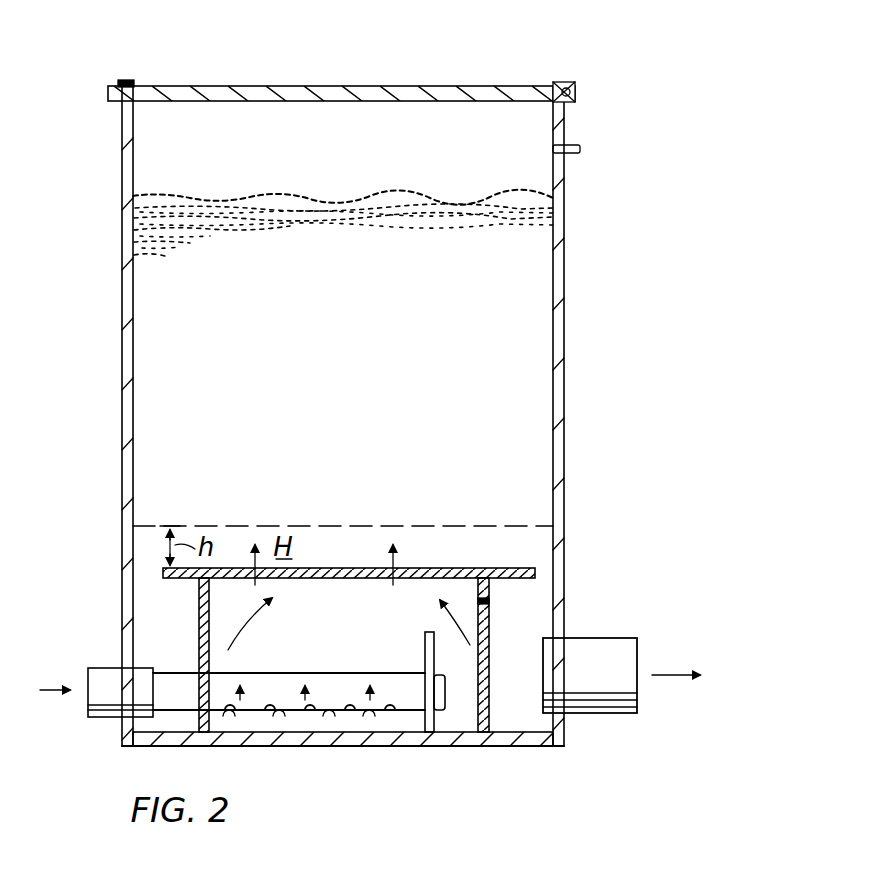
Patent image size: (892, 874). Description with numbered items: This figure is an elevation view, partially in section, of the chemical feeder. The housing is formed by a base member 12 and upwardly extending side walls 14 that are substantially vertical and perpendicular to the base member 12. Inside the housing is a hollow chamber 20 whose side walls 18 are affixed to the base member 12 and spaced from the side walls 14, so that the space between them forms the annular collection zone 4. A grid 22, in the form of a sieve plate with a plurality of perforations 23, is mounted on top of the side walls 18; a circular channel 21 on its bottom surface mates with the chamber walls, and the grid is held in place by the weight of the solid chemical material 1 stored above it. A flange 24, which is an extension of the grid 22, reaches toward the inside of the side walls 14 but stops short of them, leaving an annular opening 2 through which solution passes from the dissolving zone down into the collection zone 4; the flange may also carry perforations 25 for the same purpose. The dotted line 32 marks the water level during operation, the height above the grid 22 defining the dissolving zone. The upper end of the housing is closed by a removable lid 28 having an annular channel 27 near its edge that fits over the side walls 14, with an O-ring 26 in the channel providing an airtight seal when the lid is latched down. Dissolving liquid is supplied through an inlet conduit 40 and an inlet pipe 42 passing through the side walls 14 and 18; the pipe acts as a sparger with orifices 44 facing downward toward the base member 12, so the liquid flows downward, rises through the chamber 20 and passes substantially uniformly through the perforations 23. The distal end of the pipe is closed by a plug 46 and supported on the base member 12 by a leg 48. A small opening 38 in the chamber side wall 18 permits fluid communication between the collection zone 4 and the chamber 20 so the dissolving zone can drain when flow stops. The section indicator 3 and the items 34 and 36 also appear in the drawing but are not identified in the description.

The solid chemical material 1 is at (400, 197).
The annular opening 2 is at (342, 615).
The section line 3- 3 is at (78, 520).
The collection zone 4 is at (143, 628).
The base member 12 is at (515, 747).
The side walls 14 is at (565, 333).
The side walls of chamber 18 is at (209, 603).
The hollow chamber 20 is at (360, 646).
The circular channel 21 is at (485, 568).
The grid 22 is at (340, 568).
The perforations 23 is at (456, 568).
The flange 24 is at (500, 568).
The perforations 25 is at (515, 568).
The O-ring 26 is at (566, 84).
The annular channel 27 is at (578, 94).
The lid 28 is at (455, 86).
The dotted line 32 is at (410, 526).
The outlet 34 is at (598, 638).
The vent valve 36 is at (578, 148).
The small opening 38 is at (490, 602).
The inlet conduit 40 is at (105, 670).
The inlet pipe 42 is at (183, 700).
The orifices 44 is at (270, 690).
The plug 46 is at (445, 700).
The leg 48 is at (434, 645).